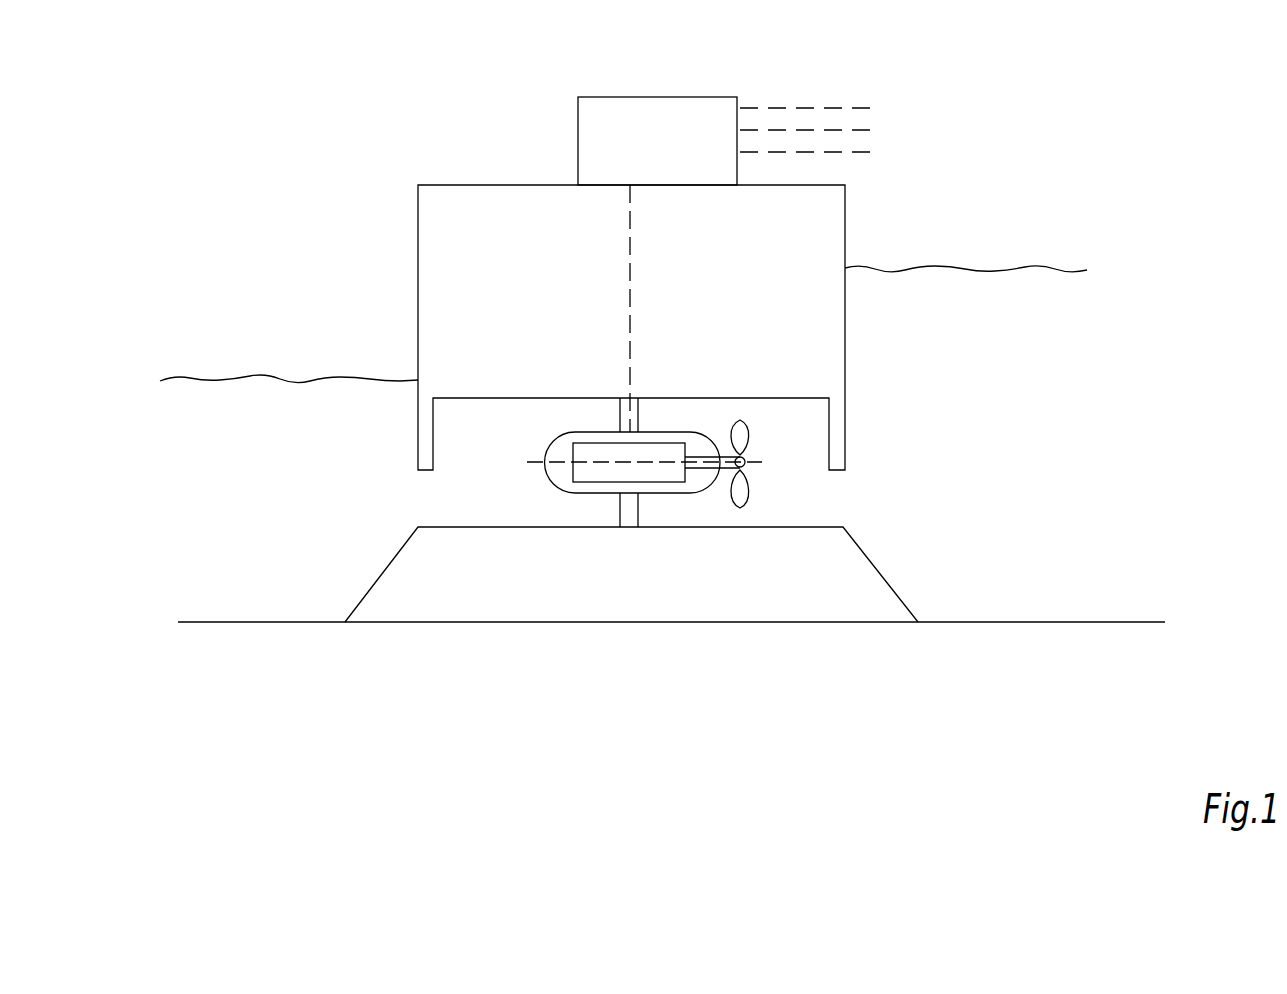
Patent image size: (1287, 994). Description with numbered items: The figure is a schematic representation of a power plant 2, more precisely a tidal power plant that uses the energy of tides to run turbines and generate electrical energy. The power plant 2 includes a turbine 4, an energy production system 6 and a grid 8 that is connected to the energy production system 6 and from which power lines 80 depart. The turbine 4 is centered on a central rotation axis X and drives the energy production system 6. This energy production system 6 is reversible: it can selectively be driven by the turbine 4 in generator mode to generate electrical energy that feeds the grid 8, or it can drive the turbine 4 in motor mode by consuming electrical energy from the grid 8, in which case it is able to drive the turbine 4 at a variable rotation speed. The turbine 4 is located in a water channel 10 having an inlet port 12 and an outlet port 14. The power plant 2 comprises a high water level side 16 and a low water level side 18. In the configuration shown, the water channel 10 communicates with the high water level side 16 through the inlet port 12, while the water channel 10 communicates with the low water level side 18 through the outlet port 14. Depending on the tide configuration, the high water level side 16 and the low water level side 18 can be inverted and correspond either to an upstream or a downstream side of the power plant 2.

The power plant 2 is at (989, 153).
The turbine 4 is at (727, 455).
The energy production system 6 is at (602, 453).
The grid 8 is at (657, 141).
The water channel 10 is at (611, 462).
The inlet port 12 is at (829, 500).
The outlet port 14 is at (441, 494).
The high water level side 16 is at (966, 284).
The low water level side 18 is at (289, 400).
The power lines 80 is at (862, 152).